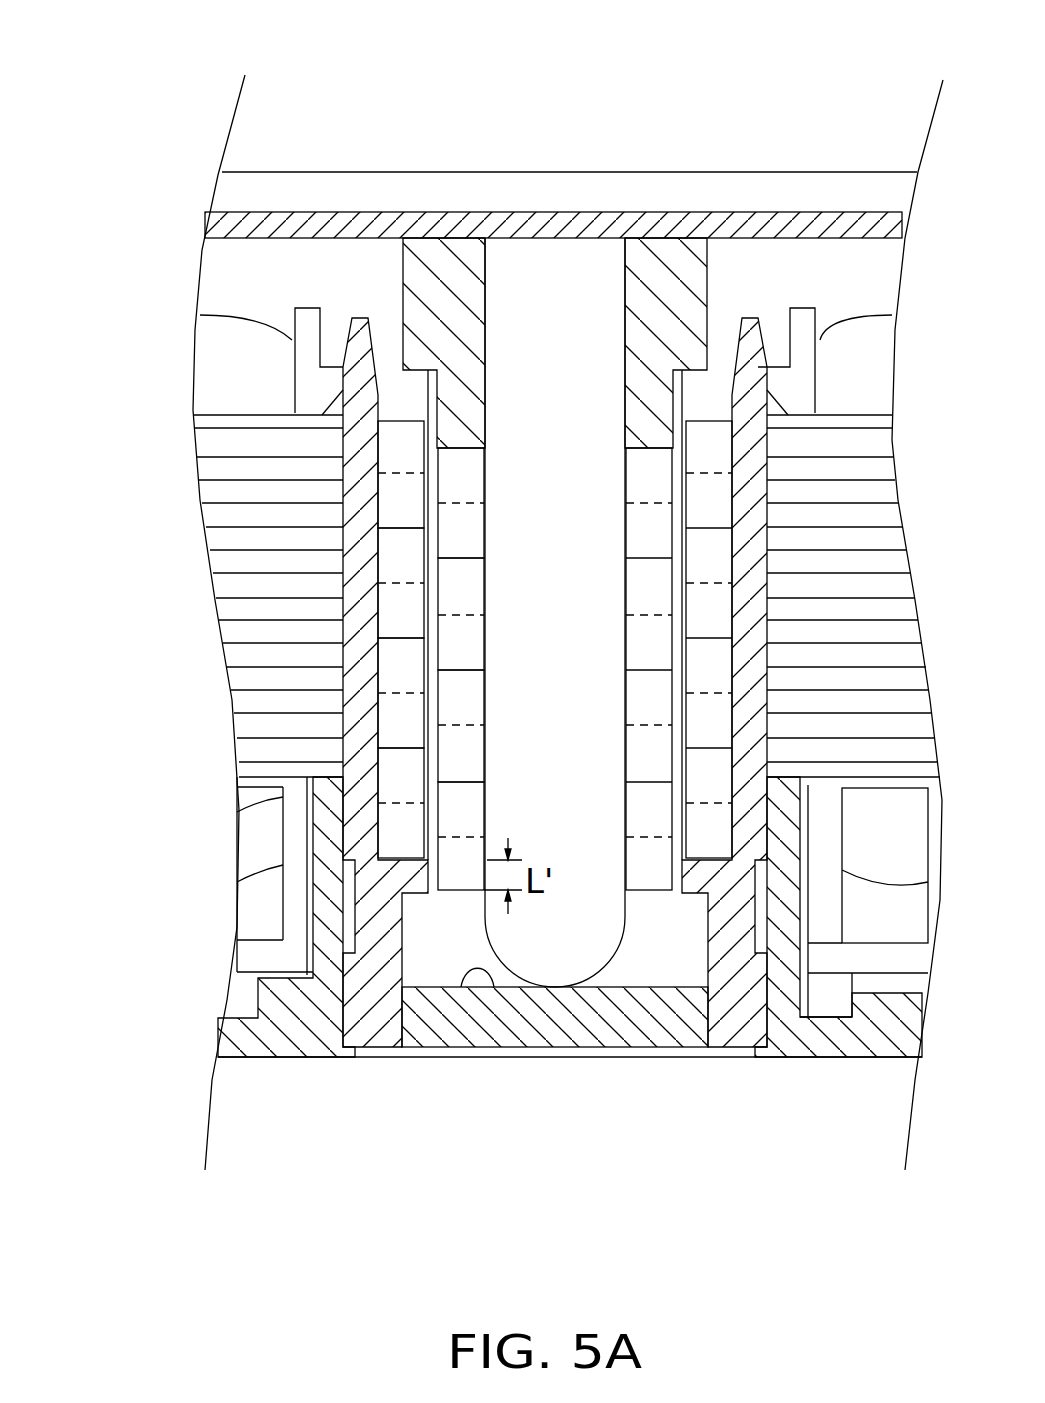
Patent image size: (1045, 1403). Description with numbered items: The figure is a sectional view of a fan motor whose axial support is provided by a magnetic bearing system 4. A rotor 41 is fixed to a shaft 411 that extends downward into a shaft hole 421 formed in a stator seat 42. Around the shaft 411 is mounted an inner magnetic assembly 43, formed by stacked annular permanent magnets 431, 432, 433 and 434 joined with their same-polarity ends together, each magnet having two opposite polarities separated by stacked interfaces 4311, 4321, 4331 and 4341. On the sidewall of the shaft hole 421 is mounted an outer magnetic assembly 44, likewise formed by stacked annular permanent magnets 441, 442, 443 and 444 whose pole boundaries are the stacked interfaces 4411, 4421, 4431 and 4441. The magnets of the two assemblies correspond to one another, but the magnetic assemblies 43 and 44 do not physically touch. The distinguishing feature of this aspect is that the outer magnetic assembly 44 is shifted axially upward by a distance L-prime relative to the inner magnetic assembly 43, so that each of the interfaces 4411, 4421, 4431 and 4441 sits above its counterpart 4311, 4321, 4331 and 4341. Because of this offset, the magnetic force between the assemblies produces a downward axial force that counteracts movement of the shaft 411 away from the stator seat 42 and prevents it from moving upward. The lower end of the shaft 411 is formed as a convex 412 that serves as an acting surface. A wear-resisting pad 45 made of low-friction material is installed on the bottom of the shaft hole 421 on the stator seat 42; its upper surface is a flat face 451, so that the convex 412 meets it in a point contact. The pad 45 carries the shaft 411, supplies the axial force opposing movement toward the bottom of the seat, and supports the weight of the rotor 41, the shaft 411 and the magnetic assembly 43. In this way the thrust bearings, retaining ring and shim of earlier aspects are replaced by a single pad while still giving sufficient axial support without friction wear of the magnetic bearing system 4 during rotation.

The magnetic bearing system 4 is at (735, 88).
The rotor 41 is at (820, 206).
The shaft 411 is at (591, 632).
The convex 412 is at (605, 972).
The stator seat 42 is at (336, 1007).
The shaft hole 421 is at (705, 400).
The magnetic assembly 43 is at (555, 492).
The annular permanent magnet 431 is at (525, 498).
The stacked interface 4311 is at (485, 503).
The annular permanent magnet 432 is at (525, 608).
The stacked interface 4321 is at (485, 615).
The annular permanent magnet 433 is at (525, 719).
The stacked interface 4331 is at (485, 725).
The annular permanent magnet 434 is at (525, 827).
The stacked interface 4341 is at (485, 837).
The magnetic assembly 44 is at (387, 476).
The annular permanent magnet 441 is at (233, 471).
The stacked interface 4411 is at (378, 440).
The annular permanent magnet 442 is at (233, 581).
The stacked interface 4421 is at (378, 553).
The annular permanent magnet 443 is at (233, 691).
The stacked interface 4431 is at (378, 661).
The annular permanent magnet 444 is at (233, 802).
The stacked interface 4441 is at (233, 812).
The wear-resisting pad 45 is at (550, 1068).
The flat face 451 is at (476, 968).